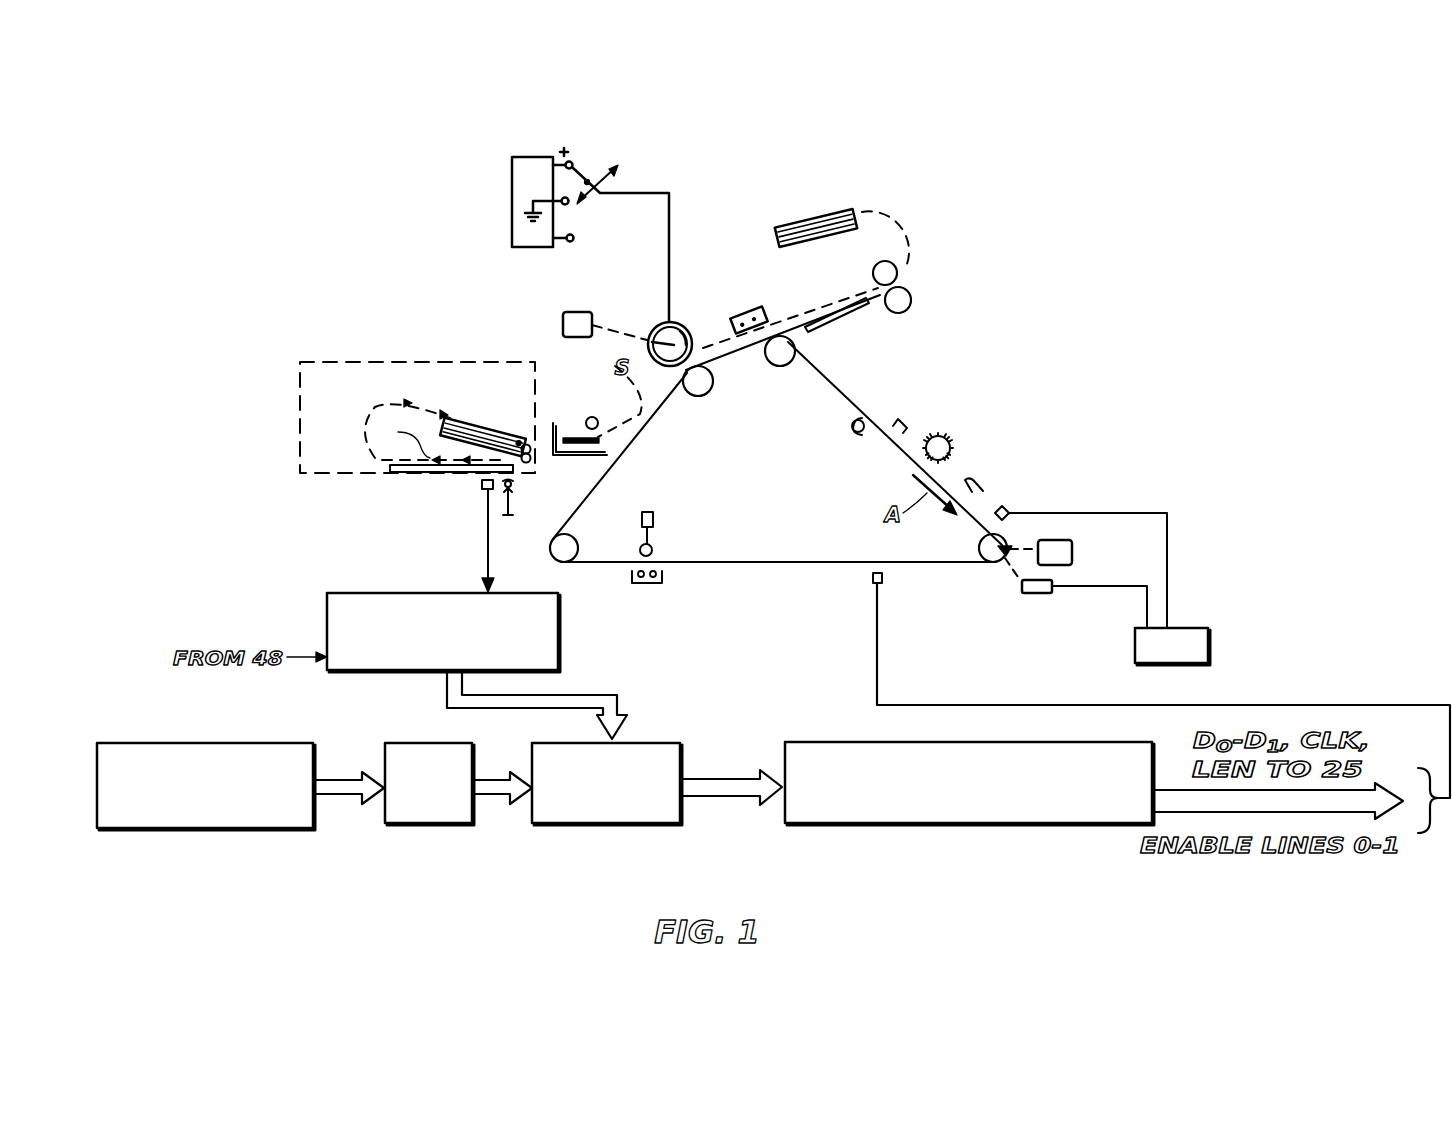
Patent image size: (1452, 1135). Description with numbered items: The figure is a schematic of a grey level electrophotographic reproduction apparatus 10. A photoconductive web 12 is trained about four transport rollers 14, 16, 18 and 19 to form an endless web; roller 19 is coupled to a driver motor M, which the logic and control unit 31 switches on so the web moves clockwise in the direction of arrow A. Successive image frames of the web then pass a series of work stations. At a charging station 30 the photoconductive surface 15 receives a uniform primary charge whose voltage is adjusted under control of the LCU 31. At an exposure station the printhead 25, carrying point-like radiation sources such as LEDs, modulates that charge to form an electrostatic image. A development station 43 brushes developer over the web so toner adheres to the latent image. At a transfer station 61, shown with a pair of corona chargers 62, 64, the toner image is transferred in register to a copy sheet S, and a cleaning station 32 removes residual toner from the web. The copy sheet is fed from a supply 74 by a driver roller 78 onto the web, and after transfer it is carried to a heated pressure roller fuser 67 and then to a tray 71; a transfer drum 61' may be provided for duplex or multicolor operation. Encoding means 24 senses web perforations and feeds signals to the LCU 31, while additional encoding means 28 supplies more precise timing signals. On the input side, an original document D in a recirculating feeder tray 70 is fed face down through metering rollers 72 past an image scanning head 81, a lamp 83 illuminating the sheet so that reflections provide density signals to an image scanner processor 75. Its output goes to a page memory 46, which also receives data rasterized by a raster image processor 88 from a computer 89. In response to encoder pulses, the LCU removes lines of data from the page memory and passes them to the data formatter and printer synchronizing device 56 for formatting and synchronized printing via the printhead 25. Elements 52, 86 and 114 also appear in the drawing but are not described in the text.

The electrophotographic reproduction apparatus 10 is at (981, 406).
The photoconductive web 12 is at (855, 404).
The transport roller 14 is at (784, 366).
The photoconductive surface 15 is at (828, 376).
The transport roller 16 is at (700, 396).
The transport roller 18 is at (563, 563).
The transport roller 19 is at (979, 549).
The encoding means 24 is at (1010, 509).
The printhead 25 is at (873, 580).
The additional encoding means 28 is at (1054, 582).
The charging station 30 is at (978, 486).
The logic and control unit 31 is at (1208, 645).
The cleaning station 32 is at (960, 443).
The development station 43 is at (665, 578).
The page memory 46 is at (647, 826).
The exposure lamp 52 is at (654, 518).
The data formatter and printer synchronizing device 56 is at (947, 825).
The transfer station 61 is at (761, 294).
The transfer drum 61' is at (680, 319).
The corona charger 62 is at (736, 318).
The corona charger 64 is at (769, 323).
The heated pressure roller fuser 67 is at (913, 296).
The recirculating feeder tray 70 is at (380, 362).
The tray 71 is at (827, 238).
The metering rollers 72 is at (531, 456).
The supply 74 is at (567, 440).
The image scanner processor 75 is at (558, 630).
The driver roller 78 is at (592, 417).
The image scanning head 81 is at (482, 488).
The lamp 83 is at (517, 486).
The lamp 86 is at (653, 551).
The raster image processor 88 is at (410, 826).
The computer 89 is at (193, 830).
The scanning head 114 is at (516, 442).